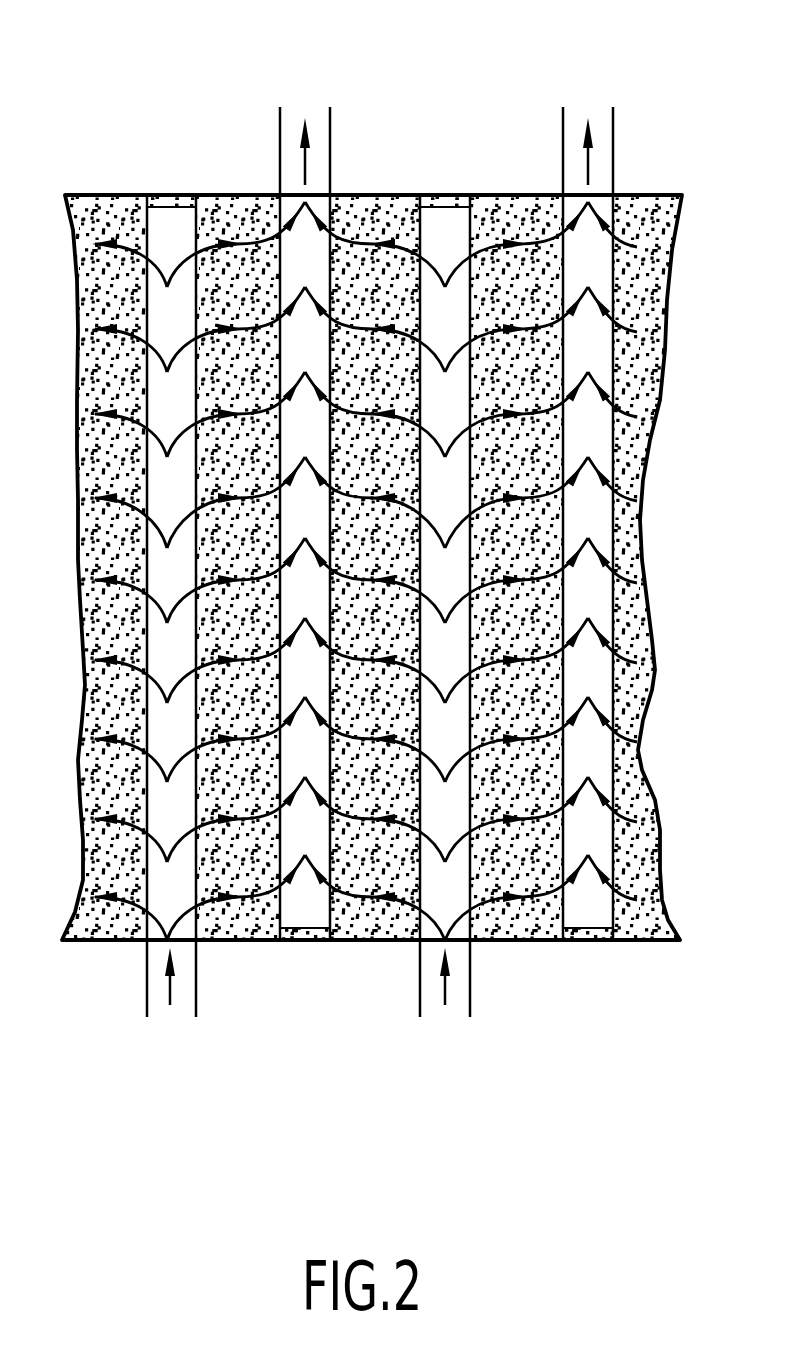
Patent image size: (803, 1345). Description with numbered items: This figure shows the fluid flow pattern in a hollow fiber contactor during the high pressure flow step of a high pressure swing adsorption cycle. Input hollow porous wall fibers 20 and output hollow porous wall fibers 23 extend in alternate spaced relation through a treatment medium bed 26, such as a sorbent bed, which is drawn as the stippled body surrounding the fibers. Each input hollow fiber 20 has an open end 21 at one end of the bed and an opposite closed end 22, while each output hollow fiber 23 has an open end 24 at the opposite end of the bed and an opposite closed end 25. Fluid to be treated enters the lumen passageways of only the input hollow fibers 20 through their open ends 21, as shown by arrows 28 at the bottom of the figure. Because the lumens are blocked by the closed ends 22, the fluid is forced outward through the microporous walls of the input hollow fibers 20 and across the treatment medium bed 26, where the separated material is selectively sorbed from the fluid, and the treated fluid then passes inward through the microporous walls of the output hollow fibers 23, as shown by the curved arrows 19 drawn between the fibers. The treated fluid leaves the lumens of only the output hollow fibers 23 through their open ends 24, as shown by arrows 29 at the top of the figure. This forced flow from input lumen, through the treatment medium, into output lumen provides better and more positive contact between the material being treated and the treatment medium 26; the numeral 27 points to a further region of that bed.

The arrows 19 is at (168, 545).
The input hollow porous wall fibers 20 is at (145, 1003).
The open ends 21 is at (160, 1018).
The closed ends 22 is at (168, 195).
The output hollow porous wall fibers 23 is at (277, 140).
The open ends 24 is at (291, 112).
The closed ends 25 is at (305, 942).
The treatment medium bed 26 is at (365, 217).
The porous wall between channels 27 is at (507, 230).
The arrows 28 is at (443, 1040).
The arrows 29 is at (595, 97).